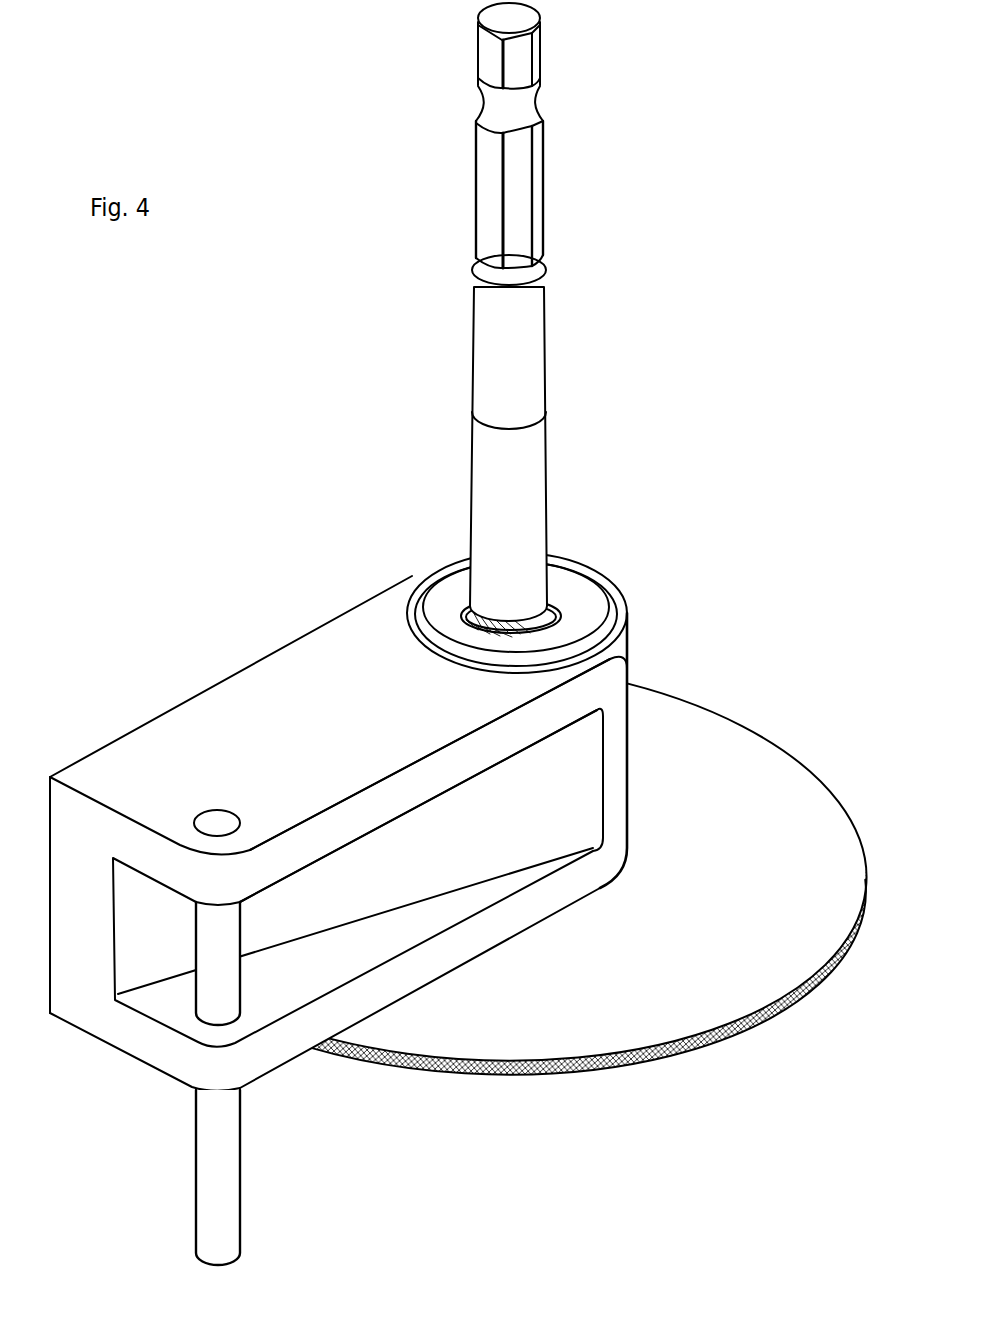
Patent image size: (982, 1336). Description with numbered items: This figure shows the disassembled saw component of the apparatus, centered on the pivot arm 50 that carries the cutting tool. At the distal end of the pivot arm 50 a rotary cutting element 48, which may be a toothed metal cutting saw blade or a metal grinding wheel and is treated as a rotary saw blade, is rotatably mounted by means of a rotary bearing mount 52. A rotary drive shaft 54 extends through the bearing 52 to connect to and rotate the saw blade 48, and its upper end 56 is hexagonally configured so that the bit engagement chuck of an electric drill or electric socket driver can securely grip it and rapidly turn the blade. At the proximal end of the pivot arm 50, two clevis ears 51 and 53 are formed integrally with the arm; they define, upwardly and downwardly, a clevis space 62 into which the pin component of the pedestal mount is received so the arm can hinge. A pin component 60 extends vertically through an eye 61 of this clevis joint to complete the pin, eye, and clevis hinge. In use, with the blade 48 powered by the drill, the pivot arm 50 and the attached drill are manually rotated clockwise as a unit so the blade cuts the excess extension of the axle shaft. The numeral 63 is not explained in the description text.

The rotary cutting element 48 is at (737, 765).
The pivot arm 50 is at (292, 677).
The clevis ear 51 is at (363, 810).
The rotary bearing mount 52 is at (452, 603).
The clevis ear 53 is at (297, 1047).
The rotary drive shaft 54 is at (533, 457).
The upper end of drive shaft 56 is at (523, 170).
The pin component 60 is at (198, 815).
The eye 61 is at (222, 810).
The clevis space 62 is at (328, 962).
The slot floor edge 63 is at (173, 1027).